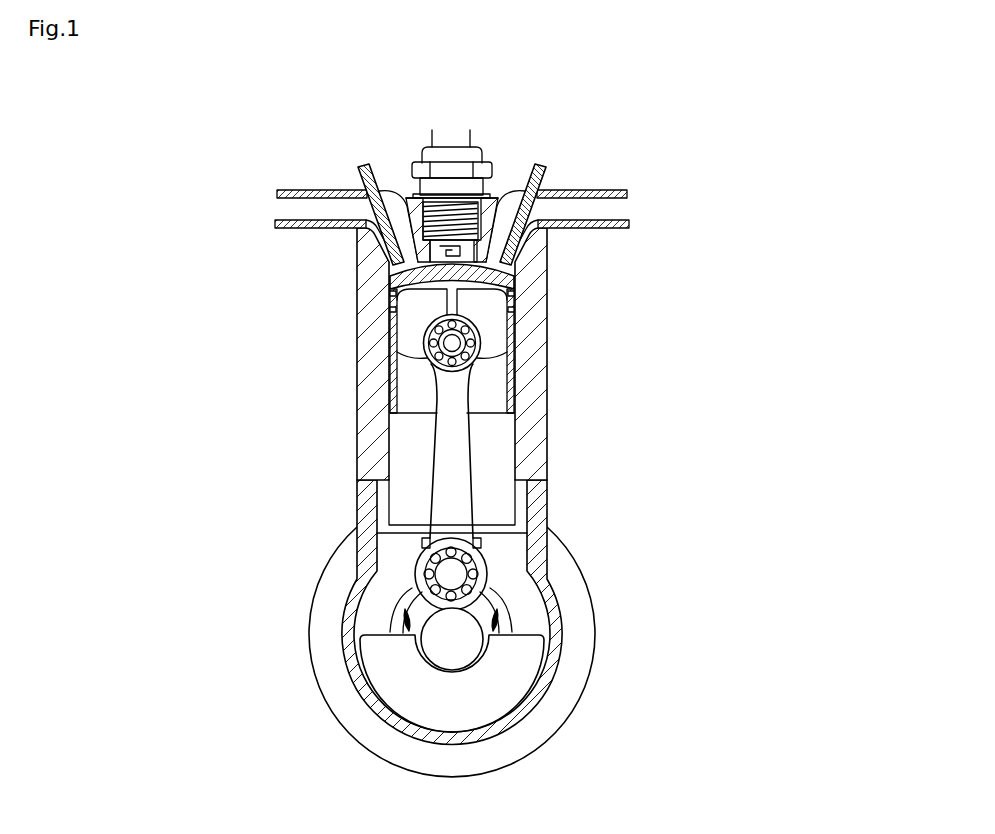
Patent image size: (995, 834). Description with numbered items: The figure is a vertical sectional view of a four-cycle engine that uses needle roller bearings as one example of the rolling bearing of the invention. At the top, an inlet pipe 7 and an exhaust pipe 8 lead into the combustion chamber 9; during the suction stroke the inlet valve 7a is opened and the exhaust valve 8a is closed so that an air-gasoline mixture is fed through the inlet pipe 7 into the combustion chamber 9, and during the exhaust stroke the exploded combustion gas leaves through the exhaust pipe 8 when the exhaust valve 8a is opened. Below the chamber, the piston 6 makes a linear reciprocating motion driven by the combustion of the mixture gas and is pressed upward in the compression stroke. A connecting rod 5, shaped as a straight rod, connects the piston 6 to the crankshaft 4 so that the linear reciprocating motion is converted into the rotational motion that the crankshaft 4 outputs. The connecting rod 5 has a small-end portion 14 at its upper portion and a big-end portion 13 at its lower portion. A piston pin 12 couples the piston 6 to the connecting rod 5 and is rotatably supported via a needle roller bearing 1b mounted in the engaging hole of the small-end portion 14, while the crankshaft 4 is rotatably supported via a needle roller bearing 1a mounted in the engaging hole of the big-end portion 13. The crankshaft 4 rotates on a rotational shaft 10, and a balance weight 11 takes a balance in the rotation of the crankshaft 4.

The needle roller bearing 1a is at (477, 575).
The needle roller bearing 1b is at (515, 327).
The crankshaft 4 is at (443, 573).
The connecting rod 5 is at (455, 470).
The piston 6 is at (472, 338).
The inlet pipe 7 is at (610, 212).
The inlet valve 7a is at (545, 172).
The exhaust pipe 8 is at (300, 205).
The exhaust valve 8a is at (362, 180).
The combustion chamber 9 is at (417, 273).
The rotational shaft 10 is at (435, 633).
The balance weight 11 is at (377, 665).
The piston pin 12 is at (430, 352).
The big-end portion 13 is at (420, 553).
The small-end portion 14 is at (450, 343).